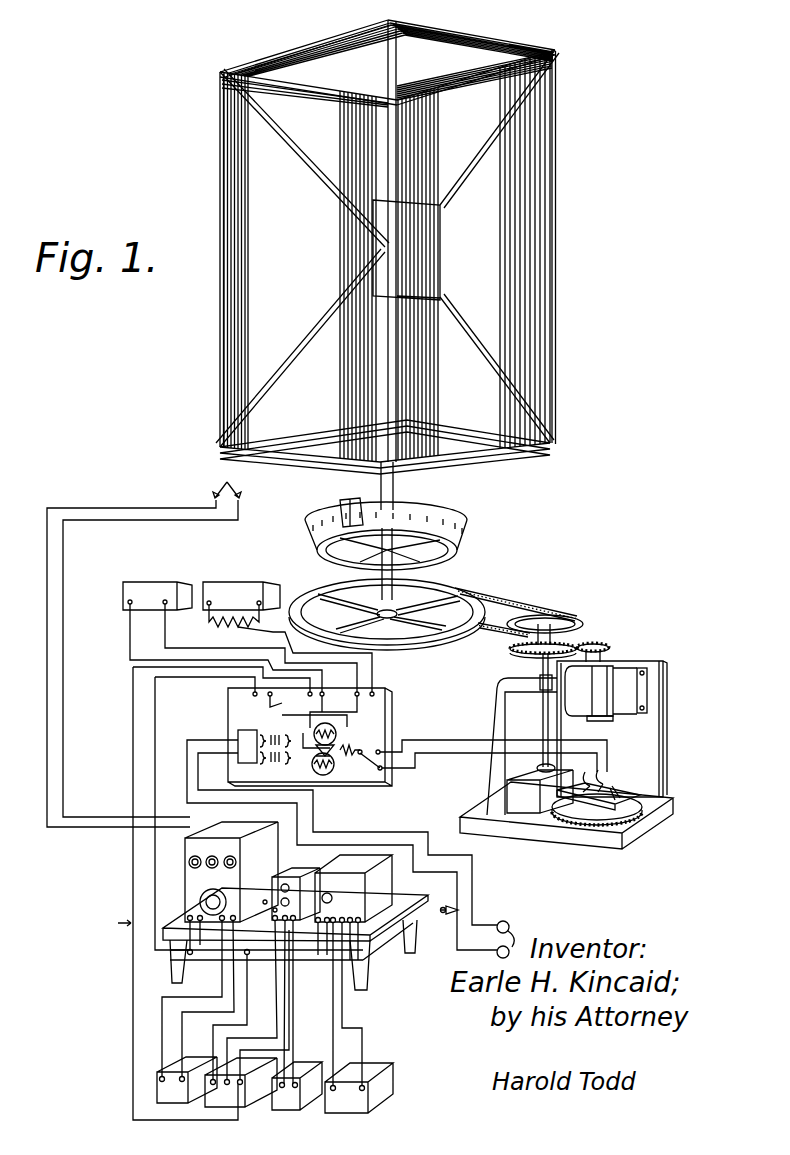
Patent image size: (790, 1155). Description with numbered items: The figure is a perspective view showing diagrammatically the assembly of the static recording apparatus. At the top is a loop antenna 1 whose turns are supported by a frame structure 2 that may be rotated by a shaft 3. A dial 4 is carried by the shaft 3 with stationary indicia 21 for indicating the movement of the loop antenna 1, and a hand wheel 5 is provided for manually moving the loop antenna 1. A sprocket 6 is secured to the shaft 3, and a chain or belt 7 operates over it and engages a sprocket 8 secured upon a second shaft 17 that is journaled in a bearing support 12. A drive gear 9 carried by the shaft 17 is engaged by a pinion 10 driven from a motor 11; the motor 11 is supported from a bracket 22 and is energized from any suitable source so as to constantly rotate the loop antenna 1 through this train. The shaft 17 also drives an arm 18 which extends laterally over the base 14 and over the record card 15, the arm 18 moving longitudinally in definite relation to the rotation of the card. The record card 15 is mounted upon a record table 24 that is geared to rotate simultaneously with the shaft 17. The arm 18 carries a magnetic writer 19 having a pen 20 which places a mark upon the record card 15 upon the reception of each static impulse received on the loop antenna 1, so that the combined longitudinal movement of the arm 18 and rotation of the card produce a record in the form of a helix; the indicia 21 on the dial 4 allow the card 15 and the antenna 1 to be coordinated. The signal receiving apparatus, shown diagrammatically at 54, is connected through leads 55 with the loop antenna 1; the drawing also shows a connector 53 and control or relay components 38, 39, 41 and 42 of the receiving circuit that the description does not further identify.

The loop antenna 1 is at (548, 284).
The frame structure 2 is at (345, 343).
The shaft 3 is at (394, 479).
The dial 4 is at (458, 521).
The hand wheel 5 is at (403, 637).
The sprocket 6 is at (356, 592).
The chain or belt 7 is at (514, 604).
The sprocket 8 is at (569, 624).
The drive gear 9 is at (516, 657).
The pinion 10 is at (598, 645).
The motor 11 is at (605, 688).
The bearing support 12 is at (498, 706).
The base 14 is at (557, 835).
The record card 15 is at (640, 806).
The shaft 17 is at (544, 711).
The arm 18 is at (578, 780).
The magnetic writer 19 is at (613, 792).
The pen 20 is at (620, 787).
The stationary indicia 21 is at (347, 503).
The bracket 22 is at (655, 691).
The record table 24 is at (607, 822).
The relay coil 38 is at (333, 762).
The control panel 39 is at (342, 728).
The relay coil 41 is at (273, 768).
The relay 42 is at (265, 725).
The plug connector 53 is at (462, 909).
The signal receiving apparatus 54 is at (110, 924).
The leads 55 is at (144, 644).